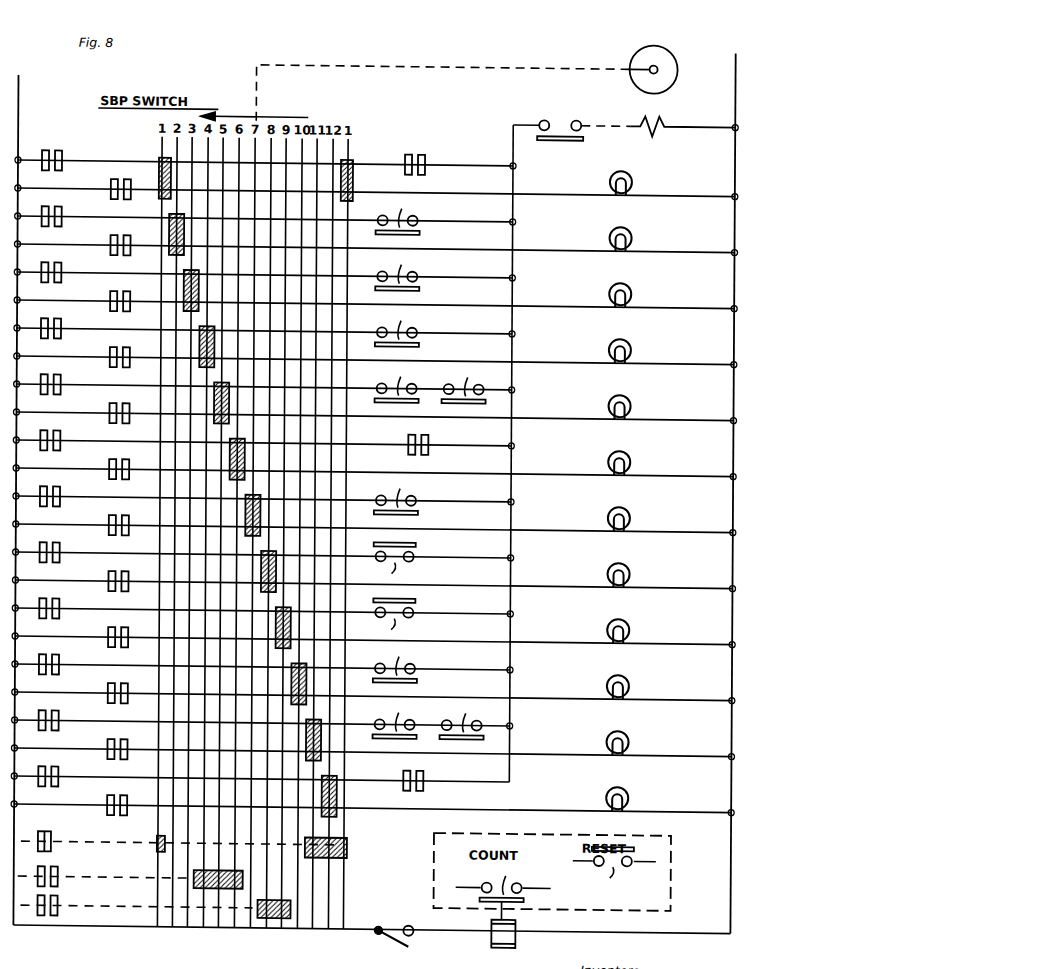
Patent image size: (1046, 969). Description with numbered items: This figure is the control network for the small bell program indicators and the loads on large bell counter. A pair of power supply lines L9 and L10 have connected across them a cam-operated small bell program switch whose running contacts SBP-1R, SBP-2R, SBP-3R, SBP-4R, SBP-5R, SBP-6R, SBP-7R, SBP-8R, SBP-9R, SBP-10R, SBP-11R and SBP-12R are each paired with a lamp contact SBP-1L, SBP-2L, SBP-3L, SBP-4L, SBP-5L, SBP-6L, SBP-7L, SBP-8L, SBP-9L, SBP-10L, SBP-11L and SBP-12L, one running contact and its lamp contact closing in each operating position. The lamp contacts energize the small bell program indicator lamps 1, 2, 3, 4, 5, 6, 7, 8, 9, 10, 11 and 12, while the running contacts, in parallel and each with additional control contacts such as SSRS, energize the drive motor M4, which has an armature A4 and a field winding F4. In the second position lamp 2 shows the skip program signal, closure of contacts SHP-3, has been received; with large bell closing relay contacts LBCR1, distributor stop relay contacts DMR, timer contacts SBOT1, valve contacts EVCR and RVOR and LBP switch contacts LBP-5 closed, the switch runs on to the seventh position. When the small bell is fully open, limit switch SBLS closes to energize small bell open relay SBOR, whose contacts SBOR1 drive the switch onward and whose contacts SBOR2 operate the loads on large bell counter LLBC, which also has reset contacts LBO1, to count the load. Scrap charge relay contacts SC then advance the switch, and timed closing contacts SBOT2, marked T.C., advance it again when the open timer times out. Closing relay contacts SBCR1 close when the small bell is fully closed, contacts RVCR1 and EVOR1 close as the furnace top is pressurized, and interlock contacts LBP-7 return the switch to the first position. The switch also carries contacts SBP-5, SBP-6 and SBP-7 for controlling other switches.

The small bell program indicator lamp 1 is at (629, 167).
The small bell program indicator lamp 2 is at (629, 223).
The small bell program indicator lamp 3 is at (629, 279).
The small bell program indicator lamp 4 is at (629, 335).
The small bell program indicator lamp 5 is at (629, 391).
The small bell program indicator lamp 6 is at (629, 447).
The small bell program indicator lamp 7 is at (629, 503).
The small bell program indicator lamp 8 is at (629, 559).
The small bell program indicator lamp 9 is at (629, 615).
The small bell program indicator lamp 10 is at (629, 671).
The small bell program indicator lamp 11 is at (629, 727).
The small bell program indicator lamp 12 is at (629, 783).
The power supply line L9 is at (18, 85).
The power supply line L10 is at (733, 45).
The armature A4 is at (634, 51).
The drive motor M4 is at (643, 102).
The field winding F4 is at (661, 118).
The control contacts SSRS is at (560, 127).
The SHP switch contacts SHP-3 is at (418, 158).
The large bell closing relay contacts LBCR1 is at (411, 217).
The distributor stop relay contacts DMR is at (404, 273).
The small bell open timer contacts SBOT1 is at (410, 329).
The equalizer valve closed relay contacts EVCR is at (386, 384).
The relief valve open relay contacts RVOR is at (469, 385).
The LBP switch contacts LBP-5 is at (422, 438).
The small bell open relay contacts SBOR1 is at (410, 497).
The scrap charge relay contacts SC is at (397, 562).
The timed closing contacts SBOT2 is at (407, 618).
The timed closing designation T.C. is at (365, 620).
The small bell closing relay contacts SBCR1 is at (408, 665).
The equalizer valve open relay contacts EVOR1 is at (384, 720).
The relief valve closed relay contacts RVCR1 is at (470, 721).
The LBP switch contacts LBP-7 is at (420, 774).
The loads on large bell counter LLBC is at (434, 853).
The small bell open relay contacts SBOR2 is at (503, 885).
The reset contacts LBO1 is at (614, 870).
The small bell open relay SBOR is at (520, 929).
The small bell open limit switch SBLS is at (398, 932).
The SBP switch contacts SBP-5 is at (54, 840).
The SBP switch contacts SBP-6 is at (64, 877).
The SBP switch contacts SBP-7 is at (64, 906).
The running contact SBP-1R is at (54, 158).
The lamp contact SBP-1L is at (118, 183).
The running contact SBP-2R is at (54, 214).
The lamp contact SBP-2L is at (118, 239).
The running contact SBP-3R is at (54, 270).
The lamp contact SBP-3L is at (118, 295).
The running contact SBP-4R is at (54, 326).
The lamp contact SBP-4L is at (118, 351).
The running contact SBP-5R is at (54, 382).
The lamp contact SBP-5L is at (118, 407).
The running contact SBP-6R is at (54, 438).
The lamp contact SBP-6L is at (118, 463).
The running contact SBP-7R is at (54, 494).
The lamp contact SBP-7L is at (118, 519).
The running contact SBP-8R is at (54, 550).
The lamp contact SBP-8L is at (118, 575).
The running contact SBP-9R is at (54, 606).
The lamp contact SBP-9L is at (118, 631).
The running contact SBP-10R is at (54, 662).
The lamp contact SBP-10L is at (118, 687).
The running contact SBP-11R is at (54, 718).
The lamp contact SBP-11L is at (118, 743).
The running contact SBP-12R is at (54, 774).
The lamp contact SBP-12L is at (118, 799).